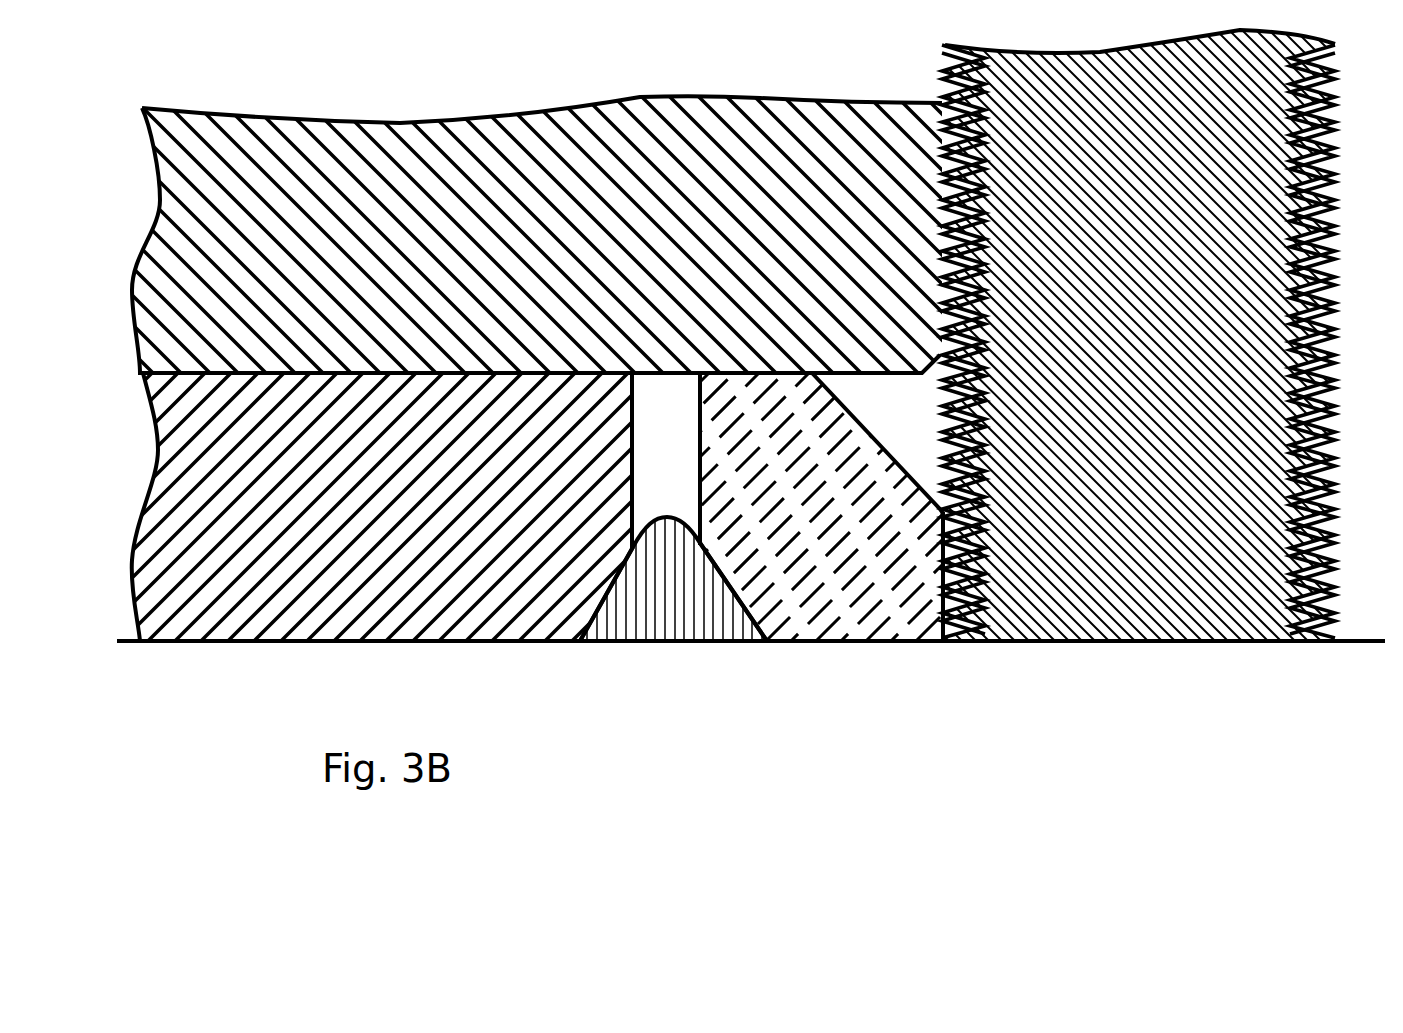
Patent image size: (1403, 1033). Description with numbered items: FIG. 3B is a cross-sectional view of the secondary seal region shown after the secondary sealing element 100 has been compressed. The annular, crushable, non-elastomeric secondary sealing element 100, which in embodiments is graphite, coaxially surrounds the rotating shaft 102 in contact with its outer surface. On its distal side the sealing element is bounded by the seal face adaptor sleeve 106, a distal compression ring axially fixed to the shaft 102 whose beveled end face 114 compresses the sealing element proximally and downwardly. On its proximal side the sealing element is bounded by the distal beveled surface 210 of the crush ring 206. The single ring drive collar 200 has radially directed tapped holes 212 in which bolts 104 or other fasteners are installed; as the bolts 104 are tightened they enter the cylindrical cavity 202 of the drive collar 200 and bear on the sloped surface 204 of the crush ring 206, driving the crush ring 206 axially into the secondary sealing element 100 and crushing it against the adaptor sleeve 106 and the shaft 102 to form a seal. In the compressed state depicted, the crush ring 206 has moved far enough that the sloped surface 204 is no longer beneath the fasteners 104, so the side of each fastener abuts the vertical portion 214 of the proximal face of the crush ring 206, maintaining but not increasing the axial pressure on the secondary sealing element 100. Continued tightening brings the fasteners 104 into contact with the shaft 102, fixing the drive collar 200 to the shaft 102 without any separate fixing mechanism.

The secondary sealing element 100 is at (647, 610).
The shaft 102 is at (1177, 689).
The bolts 104 is at (1120, 299).
The seal face adaptor sleeve 106 is at (407, 518).
The beveled end face 114 is at (610, 578).
The drive collar 200 is at (531, 261).
The cylindrical cavity 202 is at (646, 447).
The sloped surface 204 is at (885, 456).
The crush ring 206 is at (746, 434).
The beveled surface 210 is at (723, 567).
The tapped holes 212 is at (938, 162).
The vertical portion 214 is at (938, 607).